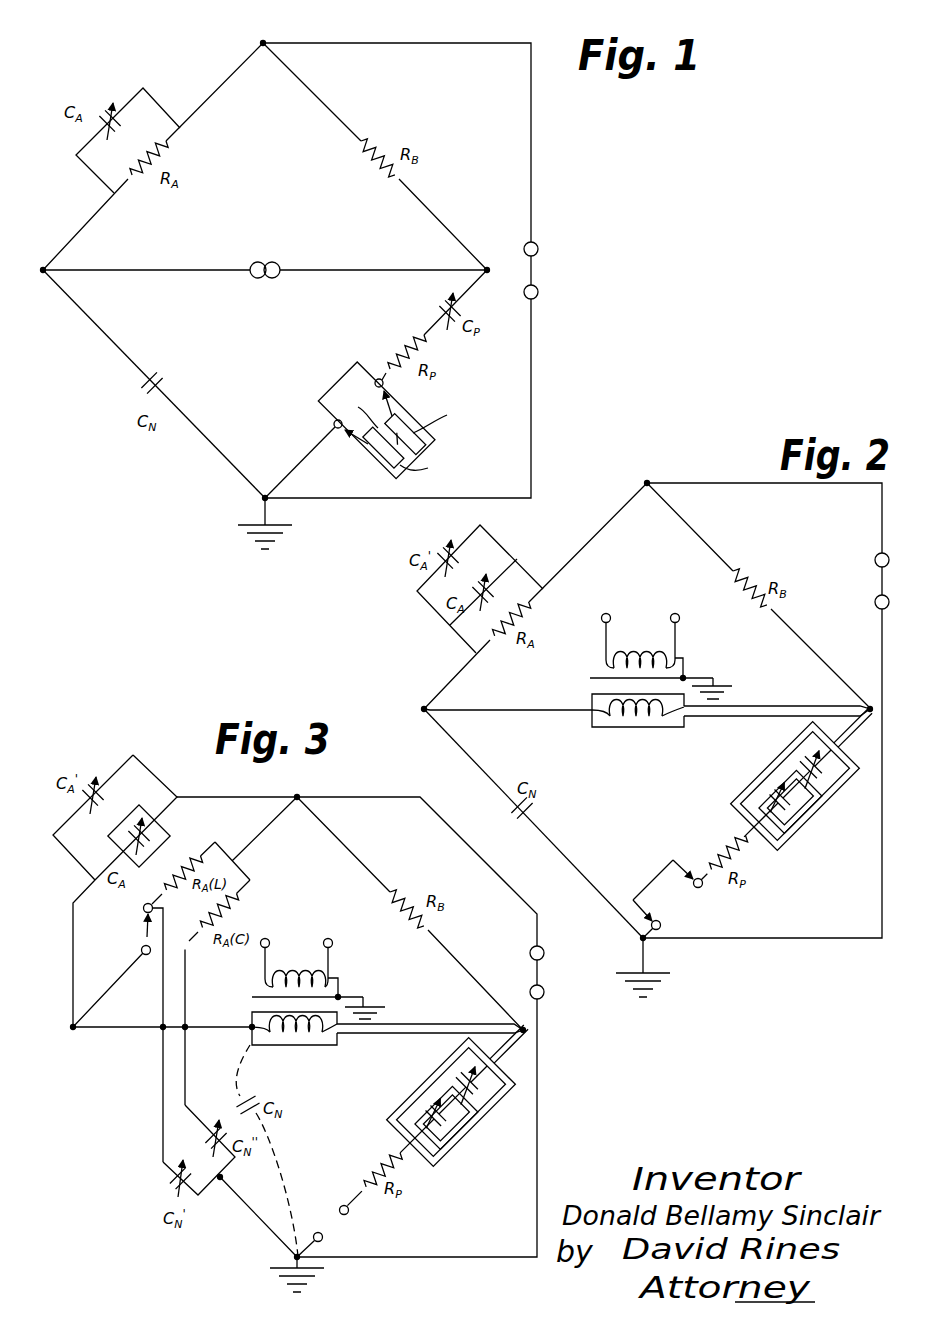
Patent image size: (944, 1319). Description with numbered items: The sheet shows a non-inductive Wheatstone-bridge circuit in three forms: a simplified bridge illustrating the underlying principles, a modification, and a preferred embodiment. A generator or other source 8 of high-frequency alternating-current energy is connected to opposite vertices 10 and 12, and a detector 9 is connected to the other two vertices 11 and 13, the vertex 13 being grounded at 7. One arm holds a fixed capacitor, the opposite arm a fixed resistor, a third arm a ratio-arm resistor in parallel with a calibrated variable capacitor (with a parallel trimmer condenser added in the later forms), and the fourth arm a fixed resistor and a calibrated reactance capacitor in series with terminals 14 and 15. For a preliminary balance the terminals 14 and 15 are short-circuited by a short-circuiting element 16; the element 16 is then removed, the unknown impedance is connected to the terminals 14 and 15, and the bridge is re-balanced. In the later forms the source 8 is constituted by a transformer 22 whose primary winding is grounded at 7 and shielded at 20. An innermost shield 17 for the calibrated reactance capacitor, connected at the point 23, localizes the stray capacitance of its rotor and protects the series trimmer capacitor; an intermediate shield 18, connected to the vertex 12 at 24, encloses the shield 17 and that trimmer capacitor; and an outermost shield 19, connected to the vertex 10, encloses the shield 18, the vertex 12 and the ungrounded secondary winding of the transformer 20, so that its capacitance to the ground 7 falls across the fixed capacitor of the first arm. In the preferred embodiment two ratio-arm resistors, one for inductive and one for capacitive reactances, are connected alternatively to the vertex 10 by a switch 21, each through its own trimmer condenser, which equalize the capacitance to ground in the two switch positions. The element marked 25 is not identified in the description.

In FIG. 1, the ground 7 is at (285, 540).
In FIG. 2, the ground 7 is at (727, 689).
In FIG. 3, the ground 7 is at (386, 1011).
In FIG. 1, the generator source 8 is at (261, 262).
In FIG. 1, the detector 9 is at (540, 271).
In FIG. 2, the detector 9 is at (890, 578).
In FIG. 3, the detector 9 is at (548, 972).
In FIG. 1, the bridge vertex 10 is at (43, 273).
In FIG. 2, the bridge vertex 10 is at (424, 708).
In FIG. 3, the bridge vertex 10 is at (73, 1030).
In FIG. 1, the bridge vertex 11 is at (260, 41).
In FIG. 2, the bridge vertex 11 is at (646, 481).
In FIG. 3, the bridge vertex 11 is at (299, 796).
In FIG. 1, the bridge vertex 12 is at (487, 268).
In FIG. 2, the bridge vertex 12 is at (870, 707).
In FIG. 3, the bridge vertex 12 is at (523, 1033).
In FIG. 1, the bridge vertex 13 is at (262, 498).
In FIG. 2, the bridge vertex 13 is at (640, 938).
In FIG. 3, the bridge vertex 13 is at (294, 1257).
In FIG. 1, the terminal 14 is at (334, 426).
In FIG. 2, the terminal 14 is at (661, 925).
In FIG. 3, the terminal 14 is at (323, 1237).
In FIG. 1, the terminal 15 is at (378, 379).
In FIG. 2, the terminal 15 is at (698, 878).
In FIG. 3, the terminal 15 is at (349, 1211).
In FIG. 1, the short-circuiting element 16 is at (333, 419).
In FIG. 2, the short-circuiting element 16 is at (654, 879).
In FIG. 2, the innermost shield 17 is at (810, 814).
In FIG. 3, the innermost shield 17 is at (466, 1125).
In FIG. 2, the intermediately disposed shield 18 is at (794, 838).
In FIG. 3, the intermediately disposed shield 18 is at (419, 1087).
In FIG. 2, the outermost shield 19 is at (781, 854).
In FIG. 3, the outermost shield 19 is at (312, 1050).
In FIG. 2, the transformer shield 20 is at (628, 670).
In FIG. 3, the transformer shield 20 is at (295, 993).
In FIG. 3, the switch 21 is at (146, 938).
In FIG. 2, the transformer 22 is at (688, 673).
In FIG. 3, the transformer 22 is at (340, 994).
In FIG. 2, the connection point 23 is at (786, 782).
In FIG. 3, the connection point 23 is at (447, 1104).
In FIG. 2, the connection point 24 is at (833, 751).
In FIG. 3, the connection point 24 is at (485, 1072).
In FIG. 2, the secondary winding 25 is at (593, 711).
In FIG. 3, the secondary winding 25 is at (250, 1030).